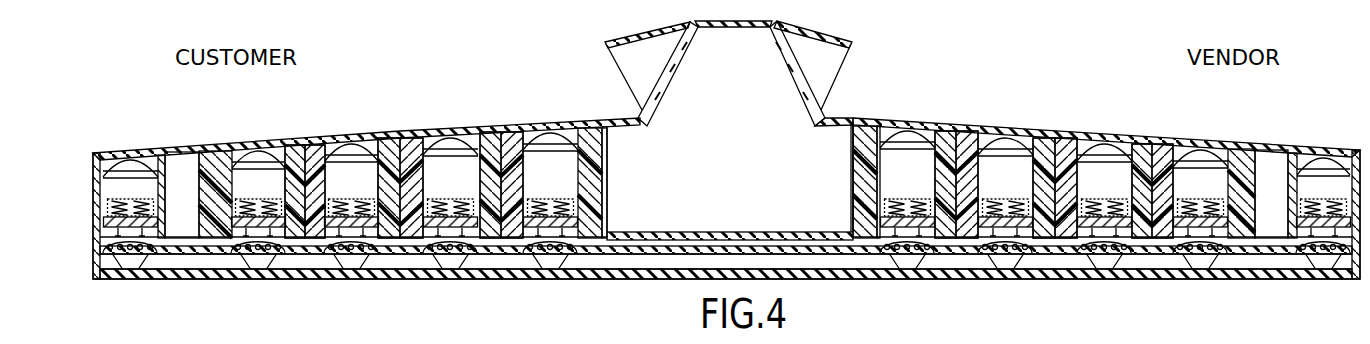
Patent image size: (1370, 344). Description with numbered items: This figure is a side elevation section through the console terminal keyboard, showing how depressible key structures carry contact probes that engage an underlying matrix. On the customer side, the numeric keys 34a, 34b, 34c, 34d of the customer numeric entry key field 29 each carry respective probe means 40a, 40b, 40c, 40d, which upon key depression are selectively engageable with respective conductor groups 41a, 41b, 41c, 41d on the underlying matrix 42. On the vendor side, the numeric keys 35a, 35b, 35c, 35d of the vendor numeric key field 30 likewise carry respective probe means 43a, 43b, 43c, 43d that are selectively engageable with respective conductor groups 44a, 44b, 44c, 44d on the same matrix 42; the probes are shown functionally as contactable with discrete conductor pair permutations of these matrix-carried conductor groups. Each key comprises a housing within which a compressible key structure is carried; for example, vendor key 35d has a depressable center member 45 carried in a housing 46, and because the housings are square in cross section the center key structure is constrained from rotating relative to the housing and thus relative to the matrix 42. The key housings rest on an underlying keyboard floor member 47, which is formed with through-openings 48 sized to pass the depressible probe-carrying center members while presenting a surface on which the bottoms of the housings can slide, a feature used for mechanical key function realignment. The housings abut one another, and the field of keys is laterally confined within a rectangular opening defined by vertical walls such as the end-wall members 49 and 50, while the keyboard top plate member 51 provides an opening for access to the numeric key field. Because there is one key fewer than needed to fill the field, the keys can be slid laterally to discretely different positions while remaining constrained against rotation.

The customer numeric entry key field 29 is at (368, 126).
The vendor numeric key field 30 is at (1077, 118).
The numeric key 34a is at (252, 177).
The numeric key 34b is at (347, 172).
The numeric key 34c is at (460, 160).
The numeric key 34d is at (562, 158).
The numeric key 35a is at (1188, 180).
The numeric key 35b is at (1093, 175).
The numeric key 35c is at (993, 167).
The numeric key 35d is at (908, 163).
The probe means 40a is at (246, 230).
The probe means 40b is at (364, 231).
The probe means 40c is at (463, 231).
The probe means 40d is at (564, 231).
The conductor group 41a is at (278, 245).
The conductor group 41b is at (338, 245).
The conductor group 41c is at (436, 245).
The conductor group 41d is at (534, 245).
The matrix 42 is at (632, 266).
The probe means 43a is at (1214, 240).
The probe means 43b is at (1118, 240).
The probe means 43c is at (1018, 240).
The probe means 43d is at (920, 240).
The conductor group 44a is at (1188, 230).
The conductor group 44b is at (1092, 230).
The conductor group 44c is at (993, 230).
The conductor group 44d is at (895, 230).
The depressable center member 45 is at (892, 147).
The housing 46 is at (866, 138).
The keyboard floor member 47 is at (780, 232).
The through-openings 48 is at (726, 306).
The end-wall member 49 is at (852, 162).
The end-wall member 50 is at (1267, 175).
The keyboard top plate member 51 is at (1318, 148).